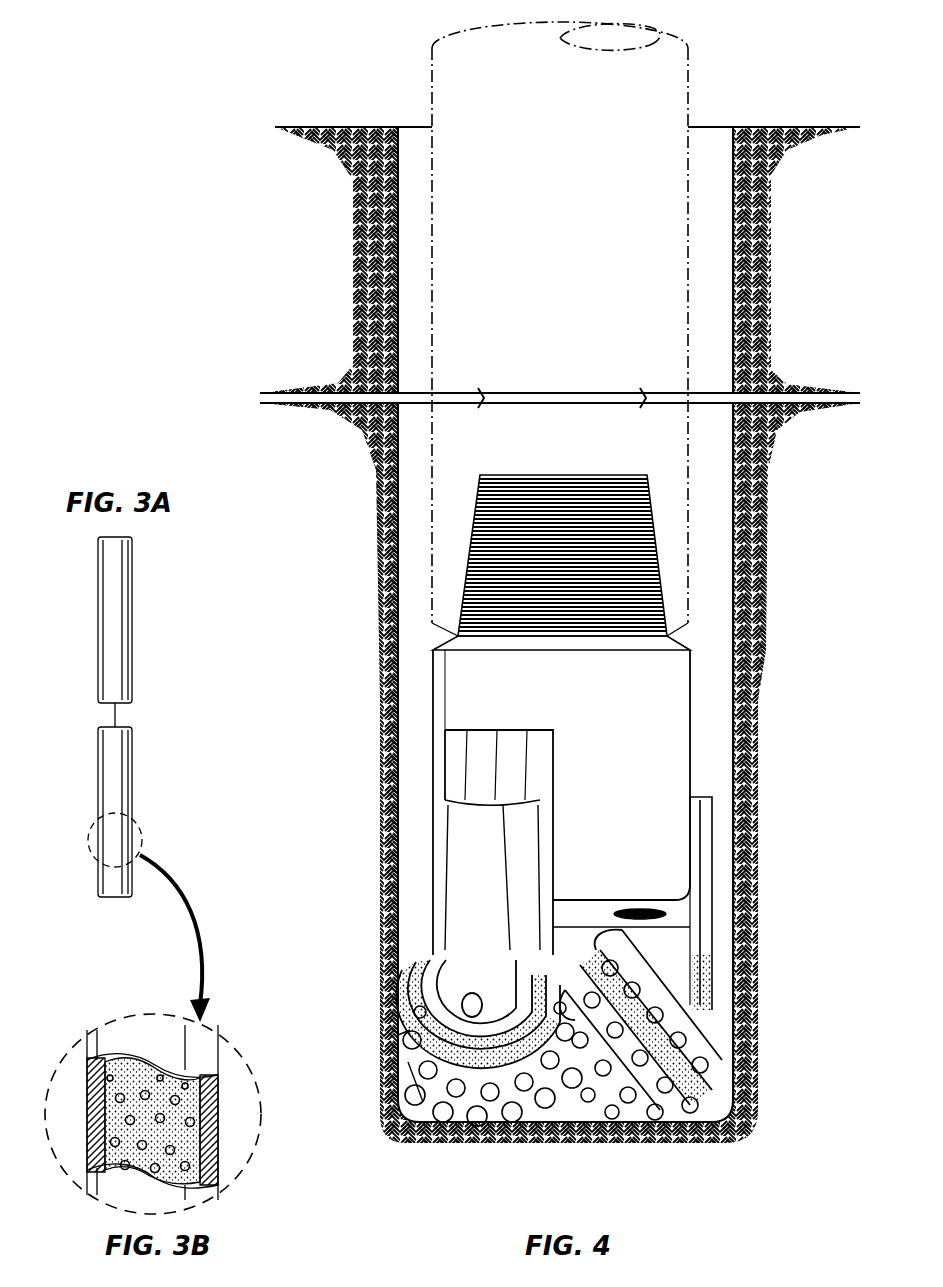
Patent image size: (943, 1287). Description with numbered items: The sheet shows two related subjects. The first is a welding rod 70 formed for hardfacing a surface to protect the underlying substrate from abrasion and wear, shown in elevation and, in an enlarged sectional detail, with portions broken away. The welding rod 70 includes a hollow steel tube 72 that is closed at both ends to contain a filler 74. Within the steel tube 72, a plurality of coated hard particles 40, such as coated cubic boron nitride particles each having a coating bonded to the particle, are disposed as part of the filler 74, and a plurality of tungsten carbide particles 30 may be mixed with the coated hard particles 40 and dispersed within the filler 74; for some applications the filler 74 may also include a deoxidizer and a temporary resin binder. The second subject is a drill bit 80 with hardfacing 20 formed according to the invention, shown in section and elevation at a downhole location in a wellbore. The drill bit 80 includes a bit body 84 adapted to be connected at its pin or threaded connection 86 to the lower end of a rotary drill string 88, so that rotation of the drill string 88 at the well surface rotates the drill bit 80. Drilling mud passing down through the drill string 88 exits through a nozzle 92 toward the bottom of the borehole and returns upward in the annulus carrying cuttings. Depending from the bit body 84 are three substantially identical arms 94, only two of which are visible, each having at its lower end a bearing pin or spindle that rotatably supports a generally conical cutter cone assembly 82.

In FIG. 4, the hardfacing on cutter cones 20 is at (480, 952).
In FIG. 3B, the tungsten carbide particles 30 is at (205, 1090).
In FIG. 3B, the coated hard particles 40 is at (90, 1110).
In FIG. 3A, the welding rod 70 is at (185, 592).
In FIG. 3B, the welding rod 70 is at (240, 1152).
In FIG. 3A, the hollow steel tube 72 is at (133, 662).
In FIG. 3B, the hollow steel tube 72 is at (222, 1120).
In FIG. 3B, the filler 74 is at (147, 1062).
In FIG. 4, the drill bit 80 is at (615, 795).
In FIG. 4, the cutter cone assembly 82 is at (752, 1070).
In FIG. 4, the bit body 84 is at (672, 737).
In FIG. 4, the threaded connection 86 is at (650, 500).
In FIG. 4, the rotary drill string 88 is at (700, 145).
In FIG. 4, the nozzle 92 is at (665, 910).
In FIG. 4, the arms 94 is at (467, 846).